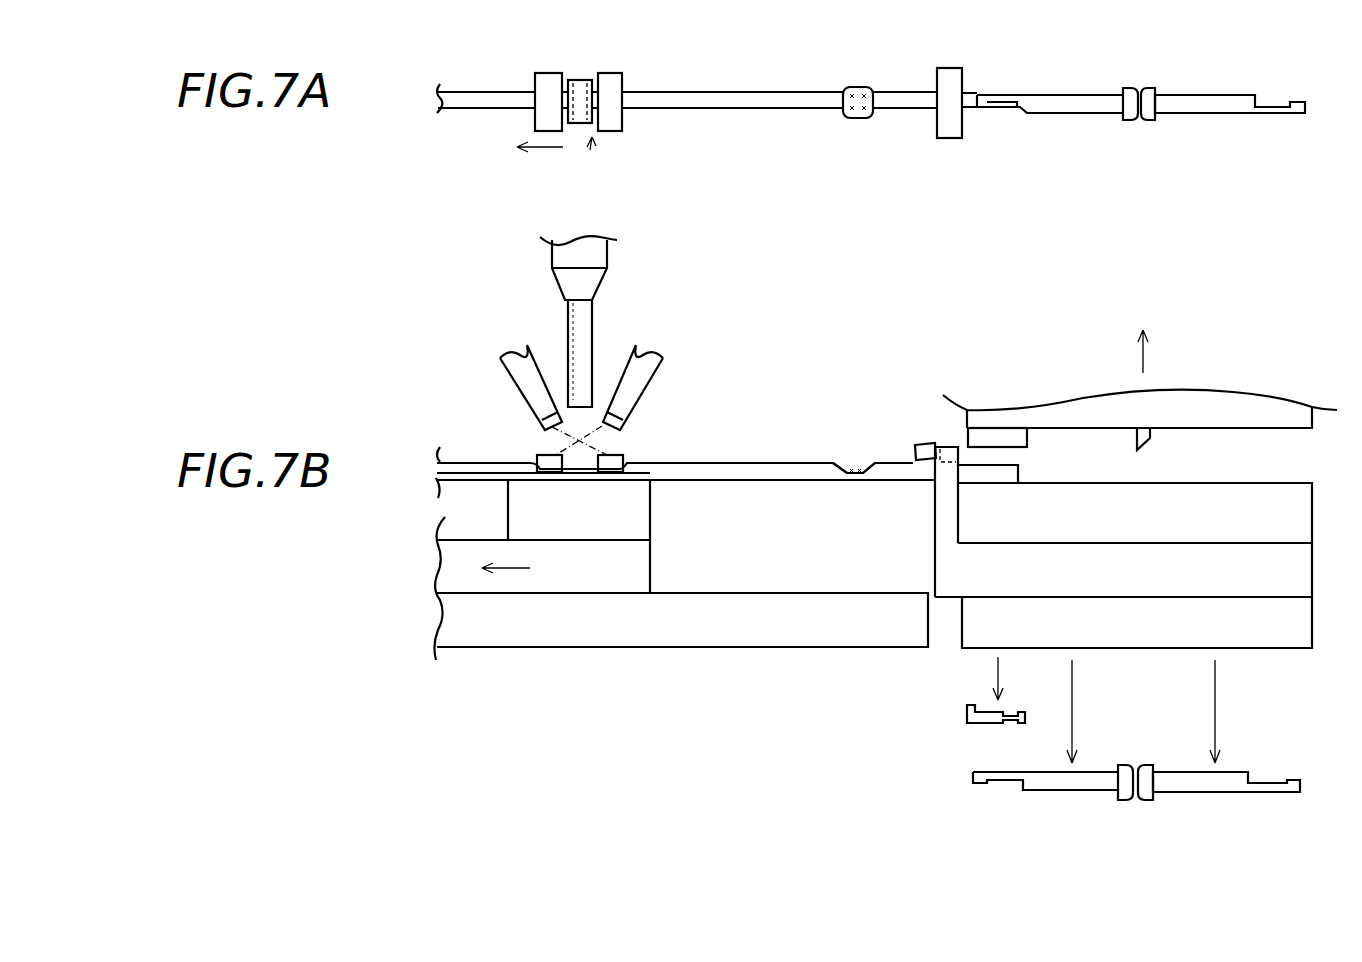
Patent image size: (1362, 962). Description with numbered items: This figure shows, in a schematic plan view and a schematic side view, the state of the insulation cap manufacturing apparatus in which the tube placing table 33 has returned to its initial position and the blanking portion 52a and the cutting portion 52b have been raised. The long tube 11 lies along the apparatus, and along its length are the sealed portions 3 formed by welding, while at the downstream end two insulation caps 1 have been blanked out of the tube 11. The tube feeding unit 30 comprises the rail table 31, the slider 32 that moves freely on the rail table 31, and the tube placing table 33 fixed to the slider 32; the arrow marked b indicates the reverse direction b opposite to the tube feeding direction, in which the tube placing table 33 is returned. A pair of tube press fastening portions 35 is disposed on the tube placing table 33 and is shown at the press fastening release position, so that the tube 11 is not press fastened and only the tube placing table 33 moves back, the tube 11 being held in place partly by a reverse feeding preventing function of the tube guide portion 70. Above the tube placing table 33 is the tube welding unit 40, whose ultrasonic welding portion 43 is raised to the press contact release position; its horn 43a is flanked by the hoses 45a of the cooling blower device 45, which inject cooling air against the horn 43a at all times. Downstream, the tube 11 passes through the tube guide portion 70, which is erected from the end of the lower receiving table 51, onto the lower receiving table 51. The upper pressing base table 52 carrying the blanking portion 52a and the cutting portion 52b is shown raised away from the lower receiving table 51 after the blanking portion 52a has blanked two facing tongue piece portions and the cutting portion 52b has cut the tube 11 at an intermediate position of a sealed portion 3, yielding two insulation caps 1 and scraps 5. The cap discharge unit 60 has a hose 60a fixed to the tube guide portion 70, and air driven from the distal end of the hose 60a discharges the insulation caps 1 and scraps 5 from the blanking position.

In FIG. 7A, the insulation cap 1 is at (1080, 95).
In FIG. 7B, the insulation cap 1 is at (1100, 778).
In FIG. 7A, the sealed portion 3 is at (857, 118).
In FIG. 7B, the sealed portion 3 is at (853, 478).
In FIG. 7B, the scraps 5 is at (967, 712).
In FIG. 7A, the tube 11 is at (732, 92).
In FIG. 7B, the tube feeding unit 30 is at (750, 658).
In FIG. 7B, the rail table 31 is at (687, 628).
In FIG. 7B, the slider 32 is at (563, 570).
In FIG. 7B, the tube placing table 33 is at (620, 512).
In FIG. 7A, the tube press fastening portions 35 is at (552, 72).
In FIG. 7B, the tube press fastening portions 35 is at (535, 457).
In FIG. 7A, the tube welding unit 40 is at (590, 152).
In FIG. 7B, the tube welding unit 40 is at (558, 342).
In FIG. 7A, the ultrasonic welding portion 43 is at (583, 82).
In FIG. 7B, the ultrasonic welding portion 43 is at (563, 278).
In FIG. 7B, the horn 43a is at (572, 332).
In FIG. 7B, the cooling blower device 45 is at (558, 399).
In FIG. 7B, the hoses 45a is at (533, 397).
In FIG. 7B, the lower receiving table 51 is at (1142, 512).
In FIG. 7B, the upper pressing base table 52 is at (1140, 390).
In FIG. 7B, the blanking portion 52a is at (1000, 435).
In FIG. 7B, the cutting portion 52b is at (1147, 433).
In FIG. 7B, the cap discharge unit 60 is at (884, 420).
In FIG. 7B, the hose 60a is at (918, 443).
In FIG. 7A, the tube guide portion 70 is at (950, 68).
In FIG. 7B, the tube guide portion 70 is at (938, 495).
In FIG. 7A, the reverse direction b is at (545, 150).
In FIG. 7B, the reverse direction b is at (513, 575).